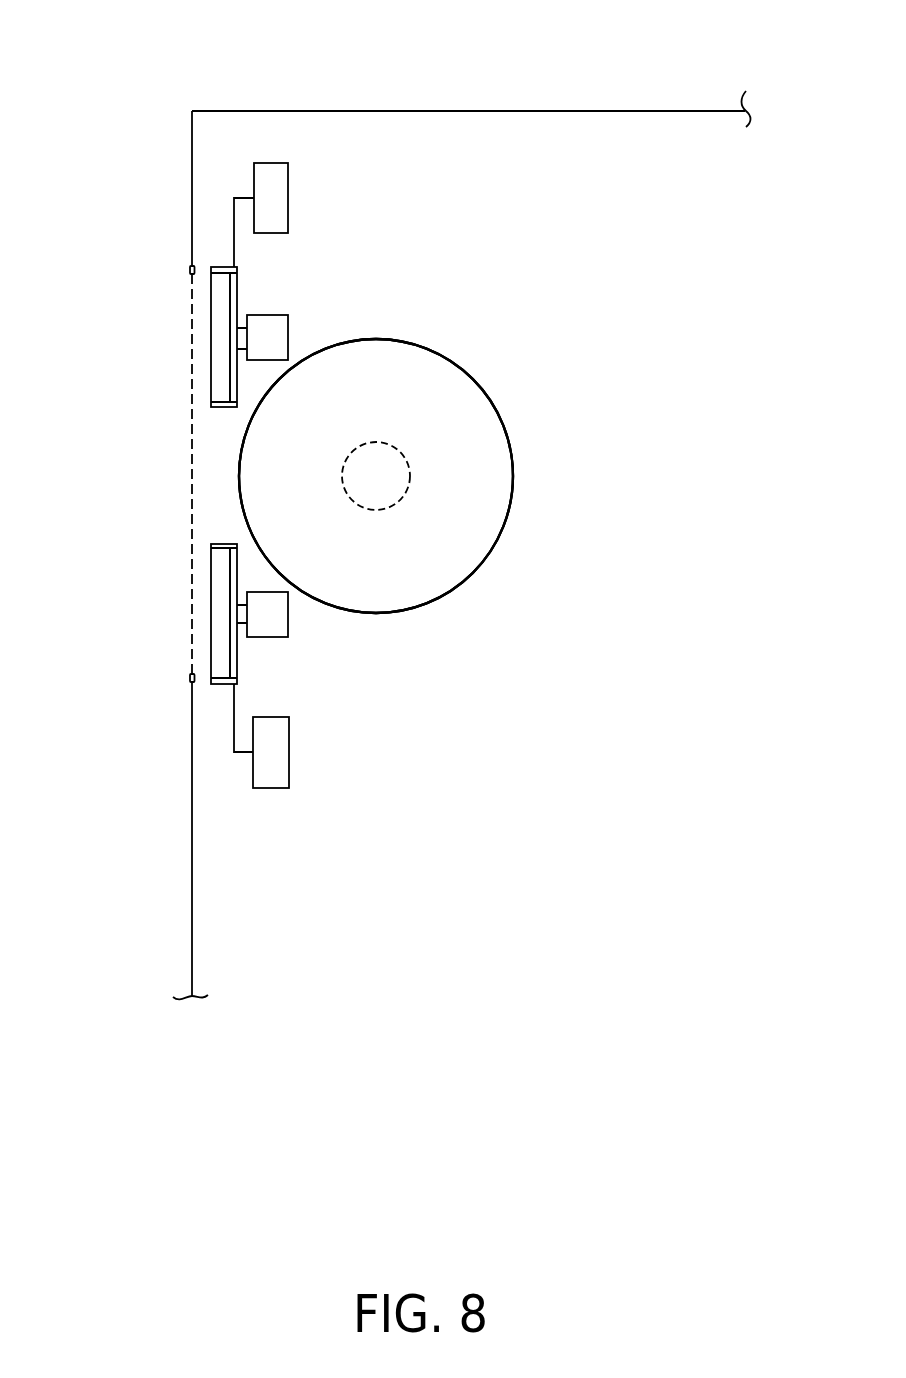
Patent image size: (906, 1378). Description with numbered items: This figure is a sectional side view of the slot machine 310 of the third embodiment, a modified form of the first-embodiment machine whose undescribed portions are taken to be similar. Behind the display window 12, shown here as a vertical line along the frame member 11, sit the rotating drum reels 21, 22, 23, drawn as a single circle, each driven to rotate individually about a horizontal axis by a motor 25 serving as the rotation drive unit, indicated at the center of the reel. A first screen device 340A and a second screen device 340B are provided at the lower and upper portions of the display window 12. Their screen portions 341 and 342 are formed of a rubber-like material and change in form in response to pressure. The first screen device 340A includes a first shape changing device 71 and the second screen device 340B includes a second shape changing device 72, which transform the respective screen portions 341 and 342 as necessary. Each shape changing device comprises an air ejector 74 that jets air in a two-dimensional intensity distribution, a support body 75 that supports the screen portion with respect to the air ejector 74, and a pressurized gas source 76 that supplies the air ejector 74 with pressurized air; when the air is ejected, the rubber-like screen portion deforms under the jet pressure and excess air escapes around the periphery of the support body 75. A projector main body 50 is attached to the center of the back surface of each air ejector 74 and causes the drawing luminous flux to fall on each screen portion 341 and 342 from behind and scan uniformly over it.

The slot machine 310 is at (785, 33).
The frame / support member 11 is at (192, 929).
The display window 12 is at (191, 491).
The second shape changing device 72 is at (224, 156).
The first shape changing device 71 is at (223, 772).
The second screen device 340B is at (316, 260).
The first screen device 340A is at (315, 752).
The air ejector 74 is at (211, 297).
The second screen portion 342 is at (211, 363).
The first screen portion 341 is at (211, 639).
The support body 75 is at (223, 267).
The projector main body 50 is at (288, 338).
The pressurized gas source 76 is at (275, 187).
The rotating drum reel 21 is at (438, 600).
The rotating drum reel 22 is at (378, 517).
The rotating drum reel 23 is at (378, 517).
The motor 25 is at (385, 443).